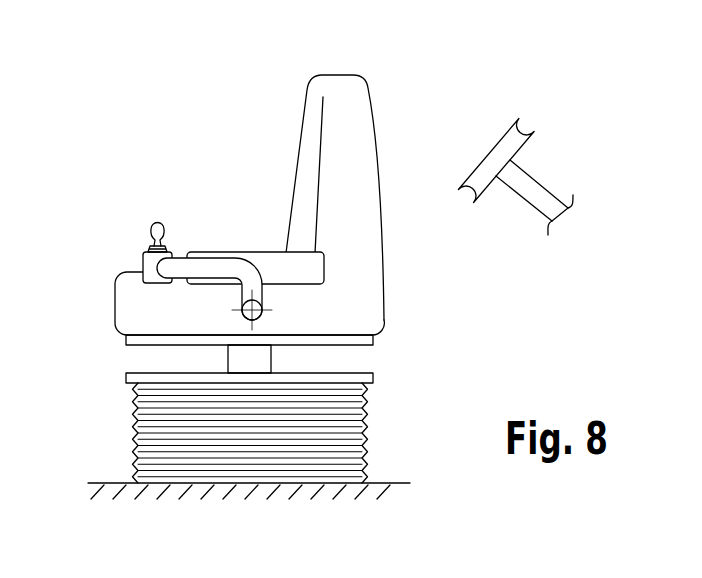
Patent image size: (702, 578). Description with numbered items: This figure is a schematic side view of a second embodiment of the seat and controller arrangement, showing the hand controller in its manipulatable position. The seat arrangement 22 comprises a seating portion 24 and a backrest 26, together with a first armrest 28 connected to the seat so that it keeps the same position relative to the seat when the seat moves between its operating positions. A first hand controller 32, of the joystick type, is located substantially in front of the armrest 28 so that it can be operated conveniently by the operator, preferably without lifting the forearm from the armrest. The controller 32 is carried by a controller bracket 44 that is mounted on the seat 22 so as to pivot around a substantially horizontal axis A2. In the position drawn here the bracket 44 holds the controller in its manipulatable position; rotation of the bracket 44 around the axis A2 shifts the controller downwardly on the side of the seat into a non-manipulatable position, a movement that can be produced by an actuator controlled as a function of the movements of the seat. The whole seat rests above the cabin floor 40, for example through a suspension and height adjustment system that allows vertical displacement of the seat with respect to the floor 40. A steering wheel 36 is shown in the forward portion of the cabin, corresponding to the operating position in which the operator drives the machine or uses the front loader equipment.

The seat arrangement 22 is at (95, 234).
The seating portion 24 is at (130, 305).
The backrest 26 is at (345, 158).
The first armrest 28 is at (262, 267).
The first hand controller 32 is at (158, 222).
The steering wheel 36 is at (522, 132).
The cabin floor 40 is at (110, 483).
The controller bracket 44 is at (197, 268).
The horizontal axis A2 is at (258, 316).